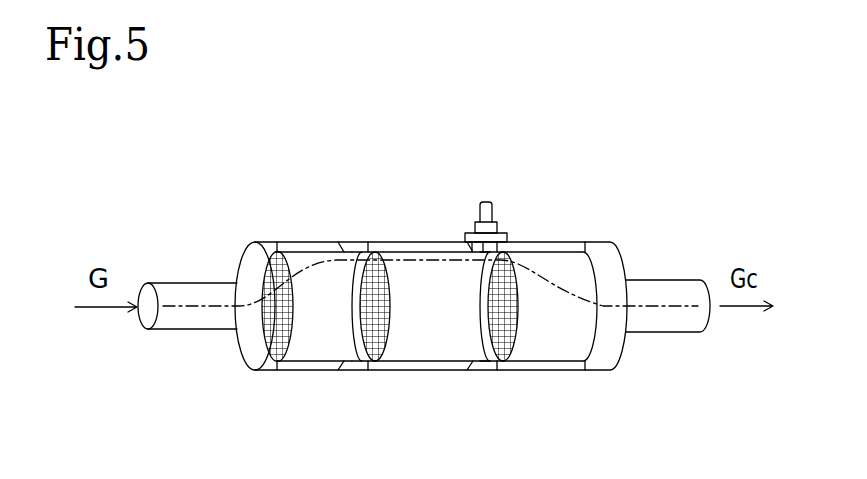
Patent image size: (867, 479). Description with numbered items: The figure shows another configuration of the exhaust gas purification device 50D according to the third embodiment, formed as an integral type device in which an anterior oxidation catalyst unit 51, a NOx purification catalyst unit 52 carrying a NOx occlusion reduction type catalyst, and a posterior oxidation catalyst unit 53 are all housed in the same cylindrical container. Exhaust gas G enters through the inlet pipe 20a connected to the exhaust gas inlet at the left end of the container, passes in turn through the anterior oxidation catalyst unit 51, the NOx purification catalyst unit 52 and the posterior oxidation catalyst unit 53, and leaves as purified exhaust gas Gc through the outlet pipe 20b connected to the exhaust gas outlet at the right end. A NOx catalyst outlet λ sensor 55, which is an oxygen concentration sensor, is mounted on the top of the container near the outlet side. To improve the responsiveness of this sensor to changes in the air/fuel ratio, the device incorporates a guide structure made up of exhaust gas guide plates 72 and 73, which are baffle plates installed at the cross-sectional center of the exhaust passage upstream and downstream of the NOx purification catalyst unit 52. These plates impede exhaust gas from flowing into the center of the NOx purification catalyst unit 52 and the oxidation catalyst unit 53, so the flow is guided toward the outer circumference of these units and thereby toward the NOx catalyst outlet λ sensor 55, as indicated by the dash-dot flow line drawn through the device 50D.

The exhaust gas purification device 50D is at (426, 230).
The inlet pipe 20a is at (202, 307).
The outlet pipe 20b is at (667, 297).
The anterior oxidation catalyst unit 51 is at (322, 317).
The NOx purification catalyst unit 52 is at (425, 317).
The posterior oxidation catalyst unit 53 is at (542, 318).
The exhaust gas guide plate 72 is at (371, 250).
The exhaust gas guide plate 73 is at (517, 250).
The NOx catalyst outlet λ sensor 55 is at (493, 205).